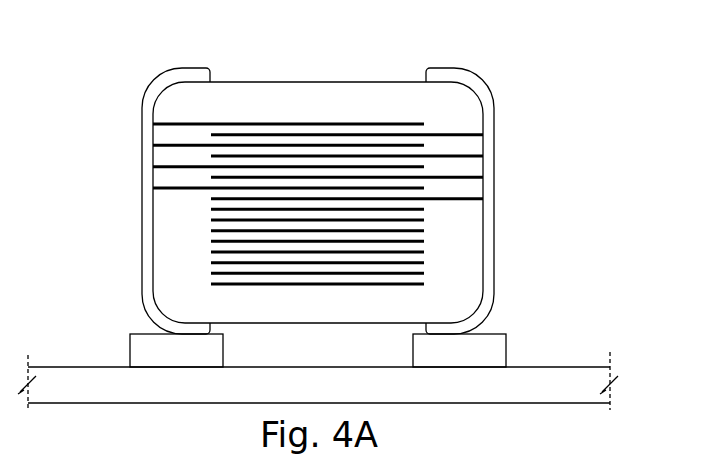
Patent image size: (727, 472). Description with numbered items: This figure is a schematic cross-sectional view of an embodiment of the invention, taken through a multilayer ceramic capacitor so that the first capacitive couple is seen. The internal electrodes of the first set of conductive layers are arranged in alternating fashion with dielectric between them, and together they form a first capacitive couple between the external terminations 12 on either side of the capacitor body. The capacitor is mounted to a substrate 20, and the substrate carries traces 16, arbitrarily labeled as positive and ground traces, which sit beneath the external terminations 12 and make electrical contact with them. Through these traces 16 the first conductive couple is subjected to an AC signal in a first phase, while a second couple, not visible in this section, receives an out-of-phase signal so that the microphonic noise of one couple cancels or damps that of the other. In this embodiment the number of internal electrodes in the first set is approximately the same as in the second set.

The external termination 12 is at (166, 80).
The trace 16 is at (155, 347).
The substrate 20 is at (103, 390).